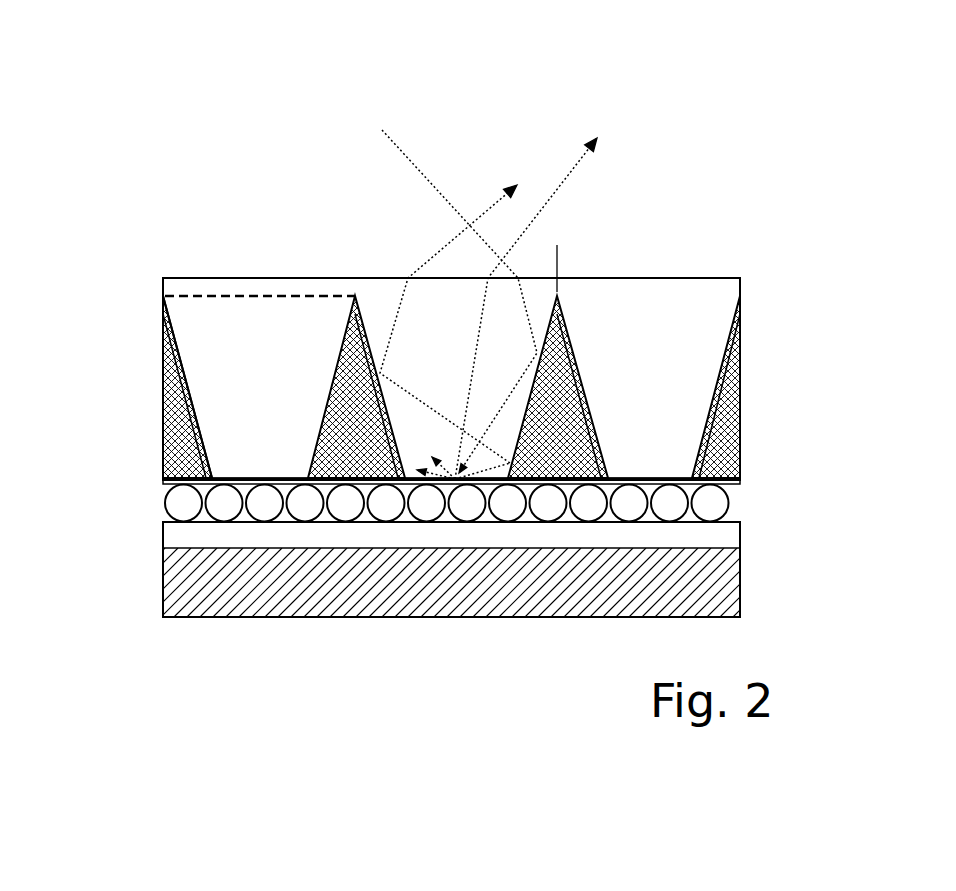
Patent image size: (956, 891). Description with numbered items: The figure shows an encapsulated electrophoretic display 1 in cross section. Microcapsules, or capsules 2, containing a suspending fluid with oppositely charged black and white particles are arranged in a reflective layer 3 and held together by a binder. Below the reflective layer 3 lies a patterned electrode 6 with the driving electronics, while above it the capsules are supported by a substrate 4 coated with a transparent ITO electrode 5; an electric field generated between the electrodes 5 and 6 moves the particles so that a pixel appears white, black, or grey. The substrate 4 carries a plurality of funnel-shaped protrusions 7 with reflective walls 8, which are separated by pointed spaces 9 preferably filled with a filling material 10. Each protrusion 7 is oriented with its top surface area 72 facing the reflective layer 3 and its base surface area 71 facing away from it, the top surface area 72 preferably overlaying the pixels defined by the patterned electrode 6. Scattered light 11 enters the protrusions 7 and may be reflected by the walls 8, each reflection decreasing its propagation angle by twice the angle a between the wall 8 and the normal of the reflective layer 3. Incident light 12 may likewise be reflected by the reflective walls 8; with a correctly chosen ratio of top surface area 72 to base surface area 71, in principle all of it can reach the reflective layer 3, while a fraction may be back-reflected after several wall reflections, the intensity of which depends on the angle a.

The encapsulated electrophoretic display 1 is at (723, 188).
The capsules 2 is at (165, 503).
The reflective layer 3 is at (762, 504).
The substrate 4 is at (752, 354).
The transparent electrode 5 is at (742, 481).
The patterned electrode 6 is at (742, 535).
The funnel-shaped protrusions 7 is at (220, 335).
The base surface area 71 is at (280, 290).
The top surface area 72 is at (280, 470).
The reflective walls 8 is at (182, 369).
The pointed spaces 9 is at (165, 428).
The filling material 10 is at (165, 392).
The scattered light 11 is at (418, 399).
The incident light 12 is at (408, 160).
The angle α a is at (560, 365).